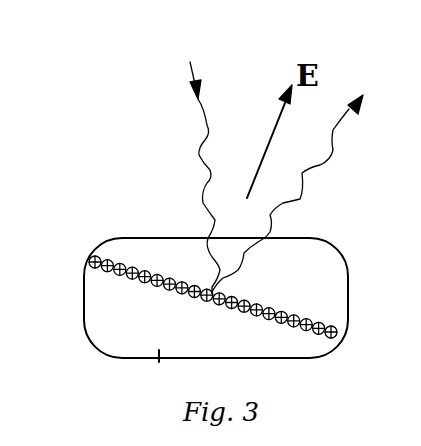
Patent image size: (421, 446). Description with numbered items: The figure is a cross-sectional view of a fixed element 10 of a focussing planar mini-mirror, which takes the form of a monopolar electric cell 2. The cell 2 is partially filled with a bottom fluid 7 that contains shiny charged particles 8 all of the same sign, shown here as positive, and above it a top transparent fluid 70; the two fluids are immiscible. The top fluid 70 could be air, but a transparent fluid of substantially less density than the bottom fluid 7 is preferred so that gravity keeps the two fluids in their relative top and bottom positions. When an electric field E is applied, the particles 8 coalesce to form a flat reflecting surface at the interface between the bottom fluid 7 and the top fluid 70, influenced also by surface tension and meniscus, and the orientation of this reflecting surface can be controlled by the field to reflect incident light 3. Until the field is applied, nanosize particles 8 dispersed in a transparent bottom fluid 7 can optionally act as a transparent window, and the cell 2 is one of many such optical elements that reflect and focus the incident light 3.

The monopolar electric cell 2 is at (306, 283).
The incident light 3 is at (200, 145).
The bottom fluid 7 is at (159, 352).
The shiny charged particles 8 is at (160, 279).
The fixed element 10 is at (70, 348).
The top transparent fluid 70 is at (345, 278).